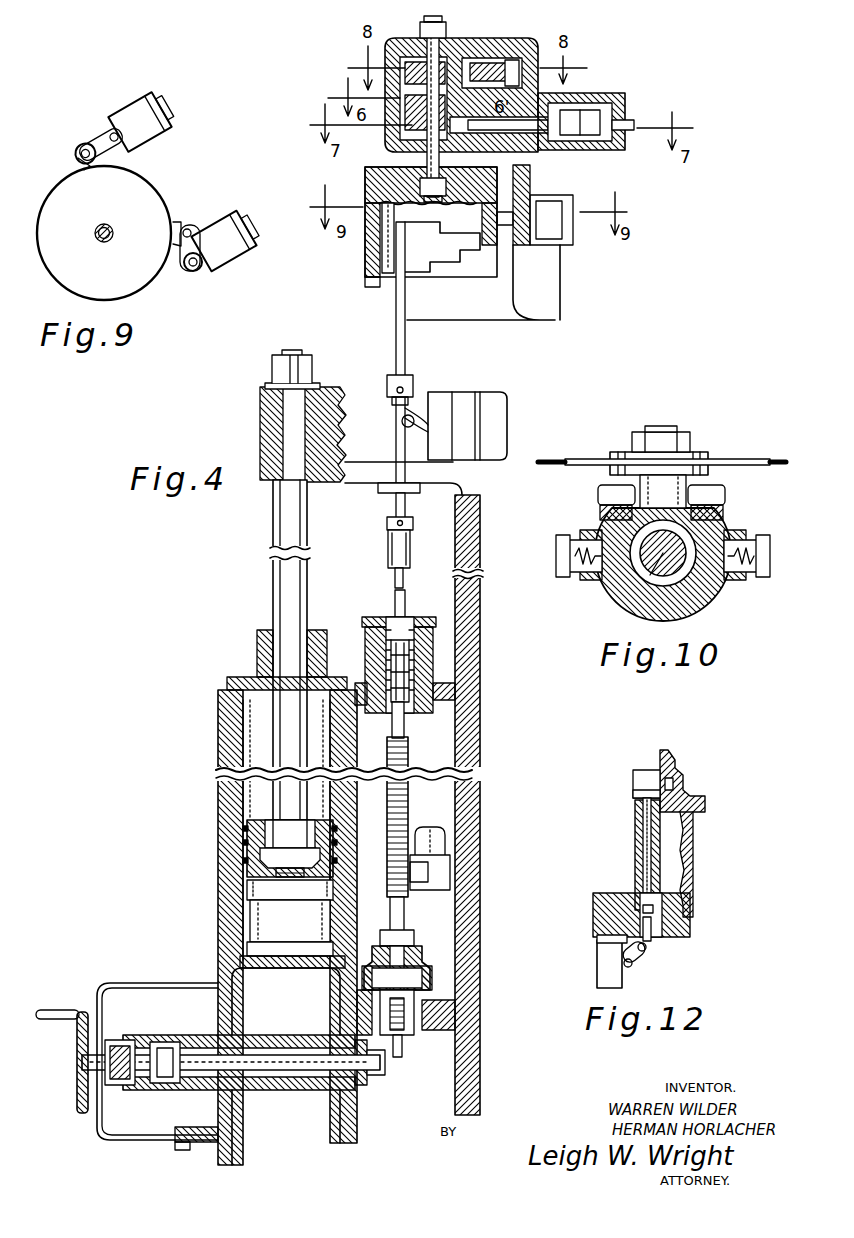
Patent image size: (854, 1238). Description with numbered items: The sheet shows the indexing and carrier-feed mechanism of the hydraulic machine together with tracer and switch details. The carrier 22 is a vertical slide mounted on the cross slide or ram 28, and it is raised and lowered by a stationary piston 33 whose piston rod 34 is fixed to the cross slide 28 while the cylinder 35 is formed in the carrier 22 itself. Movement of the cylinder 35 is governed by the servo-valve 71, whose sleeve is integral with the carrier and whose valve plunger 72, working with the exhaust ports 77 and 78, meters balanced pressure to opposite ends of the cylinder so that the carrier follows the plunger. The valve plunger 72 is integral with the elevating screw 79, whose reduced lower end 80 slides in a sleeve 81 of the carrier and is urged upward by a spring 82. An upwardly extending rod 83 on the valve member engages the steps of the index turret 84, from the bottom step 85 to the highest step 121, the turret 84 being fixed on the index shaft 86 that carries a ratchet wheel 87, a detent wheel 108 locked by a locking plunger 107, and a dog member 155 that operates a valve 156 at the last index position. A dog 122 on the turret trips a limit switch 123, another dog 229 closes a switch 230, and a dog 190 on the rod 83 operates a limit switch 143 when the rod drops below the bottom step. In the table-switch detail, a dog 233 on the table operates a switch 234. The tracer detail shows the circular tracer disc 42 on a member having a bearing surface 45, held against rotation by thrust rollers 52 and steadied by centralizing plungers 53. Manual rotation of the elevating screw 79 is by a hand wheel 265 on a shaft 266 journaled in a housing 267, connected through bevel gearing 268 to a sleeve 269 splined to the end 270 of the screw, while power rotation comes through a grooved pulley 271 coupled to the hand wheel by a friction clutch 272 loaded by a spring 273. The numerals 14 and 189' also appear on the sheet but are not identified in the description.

In FIG. 12, the bracket 14 is at (677, 764).
In FIG. 4, the carrier 22 is at (224, 857).
In FIG. 4, the cross slide 28 is at (362, 351).
In FIG. 4, the piston 33 is at (253, 838).
In FIG. 4, the piston rod 34 is at (272, 583).
In FIG. 4, the cylinder 35 is at (248, 885).
In FIG. 10, the tracer disc 42 is at (752, 456).
In FIG. 10, the bearing surface 45 is at (640, 618).
In FIG. 10, the thrust rollers 52 is at (604, 492).
In FIG. 10, the centralizing plungers 53 is at (612, 577).
In FIG. 4, the servo-valve 71 is at (416, 713).
In FIG. 4, the valve plunger 72 is at (408, 614).
In FIG. 4, the exhaust port 77 is at (433, 645).
In FIG. 4, the exhaust port 78 is at (414, 690).
In FIG. 4, the elevating screw 79 is at (410, 800).
In FIG. 4, the reduced end of elevating screw 80 is at (424, 950).
In FIG. 4, the sleeve 81 is at (414, 1007).
In FIG. 4, the spring 82 is at (377, 998).
In FIG. 4, the rod 83 is at (406, 342).
In FIG. 9, the index turret 84 is at (147, 273).
In FIG. 4, the index turret 84 is at (492, 252).
In FIG. 4, the bottom step 85 is at (387, 279).
In FIG. 9, the index shaft 86 is at (111, 229).
In FIG. 4, the index shaft 86 is at (430, 157).
In FIG. 4, the ratchet wheel 87 is at (410, 42).
In FIG. 4, the locking plunger 107 is at (497, 147).
In FIG. 4, the detent wheel 108 is at (412, 132).
In FIG. 4, the highest step 121 is at (390, 215).
In FIG. 9, the dog 122 is at (183, 224).
In FIG. 9, the limit switch 123 is at (226, 256).
In FIG. 4, the limit switch 143 is at (447, 407).
In FIG. 4, the dog member 155 is at (448, 60).
In FIG. 4, the valve 156 is at (492, 62).
In FIG. 4, the fitting 189' is at (464, 858).
In FIG. 4, the dog 190 is at (412, 378).
In FIG. 9, the dog 229 is at (74, 164).
In FIG. 9, the switch 230 is at (160, 135).
In FIG. 12, the dog 233 is at (646, 800).
In FIG. 12, the switch 234 is at (600, 958).
In FIG. 4, the hand wheel 265 is at (80, 1113).
In FIG. 4, the shaft 266 is at (273, 1070).
In FIG. 4, the housing 267 is at (303, 1090).
In FIG. 4, the bevel gearing 268 is at (406, 1052).
In FIG. 4, the sleeve 269 is at (433, 980).
In FIG. 4, the end of elevating screw 270 is at (414, 938).
In FIG. 4, the grooved pulley 271 is at (110, 1097).
In FIG. 4, the friction clutch 272 is at (110, 1043).
In FIG. 4, the spring 273 is at (150, 1045).